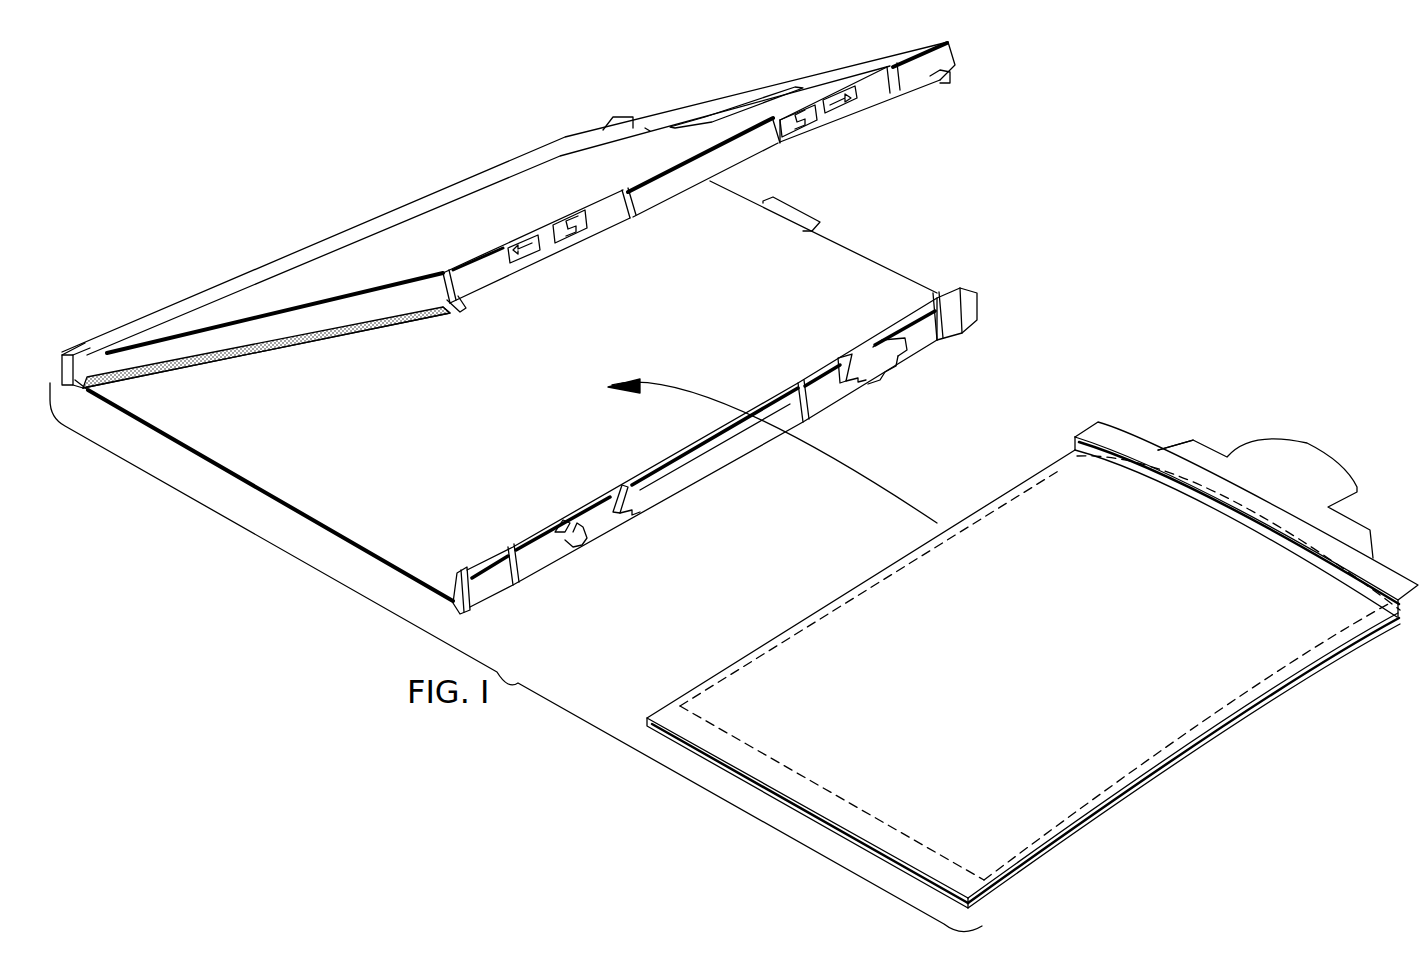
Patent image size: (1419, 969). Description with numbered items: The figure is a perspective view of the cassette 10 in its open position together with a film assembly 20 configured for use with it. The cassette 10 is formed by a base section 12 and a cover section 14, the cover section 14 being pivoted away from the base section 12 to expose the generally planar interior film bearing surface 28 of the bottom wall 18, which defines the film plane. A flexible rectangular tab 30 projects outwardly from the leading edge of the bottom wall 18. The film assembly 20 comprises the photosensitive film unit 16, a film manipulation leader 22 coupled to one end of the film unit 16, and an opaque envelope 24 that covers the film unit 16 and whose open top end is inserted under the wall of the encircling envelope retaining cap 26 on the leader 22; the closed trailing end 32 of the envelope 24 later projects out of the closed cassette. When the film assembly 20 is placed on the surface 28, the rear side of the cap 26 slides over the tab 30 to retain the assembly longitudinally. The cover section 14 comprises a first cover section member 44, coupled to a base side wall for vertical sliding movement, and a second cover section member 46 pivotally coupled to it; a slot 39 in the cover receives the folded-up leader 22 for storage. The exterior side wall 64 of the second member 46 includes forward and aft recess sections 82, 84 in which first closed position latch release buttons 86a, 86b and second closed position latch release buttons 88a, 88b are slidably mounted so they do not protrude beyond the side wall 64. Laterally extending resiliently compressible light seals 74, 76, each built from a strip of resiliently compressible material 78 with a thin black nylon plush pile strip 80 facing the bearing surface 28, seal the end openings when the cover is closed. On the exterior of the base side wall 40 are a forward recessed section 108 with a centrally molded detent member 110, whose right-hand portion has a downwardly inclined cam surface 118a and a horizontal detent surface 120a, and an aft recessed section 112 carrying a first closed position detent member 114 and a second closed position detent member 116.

The cassette 10 is at (1010, 171).
The base section 12 is at (993, 299).
The cover section 14 is at (965, 57).
The photosensitive film unit 16 is at (997, 535).
The bottom wall 18 is at (843, 263).
The film assembly 20 is at (1197, 415).
The film manipulation leader 22 is at (1248, 470).
The opaque envelope 24 is at (1208, 724).
The envelope retaining cap 26 is at (1120, 443).
The film bearing surface 28 is at (740, 324).
The tab 30 is at (790, 213).
The trailing end 32 is at (674, 722).
The slot 39 is at (735, 103).
The side wall 40 is at (730, 449).
The first cover section member 44 is at (565, 125).
The second cover section member 46 is at (646, 115).
The exterior side wall 64 is at (685, 182).
The light seal 74 is at (940, 76).
The light seal 76 is at (455, 326).
The strip of resiliently compressible material 78 is at (340, 330).
The nylon plush pile strip 80 is at (392, 324).
The forward recess section 82 is at (878, 89).
The aft recess section 84 is at (607, 214).
The first closed position latch release button 86a is at (853, 102).
The first closed position latch release button 86b is at (522, 260).
The second closed position latch release button 88a is at (800, 128).
The second closed position latch release button 88b is at (568, 236).
The forward recessed section 108 is at (920, 333).
The detent member 110 is at (863, 366).
The aft recessed section 112 is at (532, 557).
The first closed position detent member 114 is at (568, 538).
The second closed position detent member 116 is at (634, 505).
The cam surface 118a is at (893, 340).
The detent surface 120a is at (887, 352).